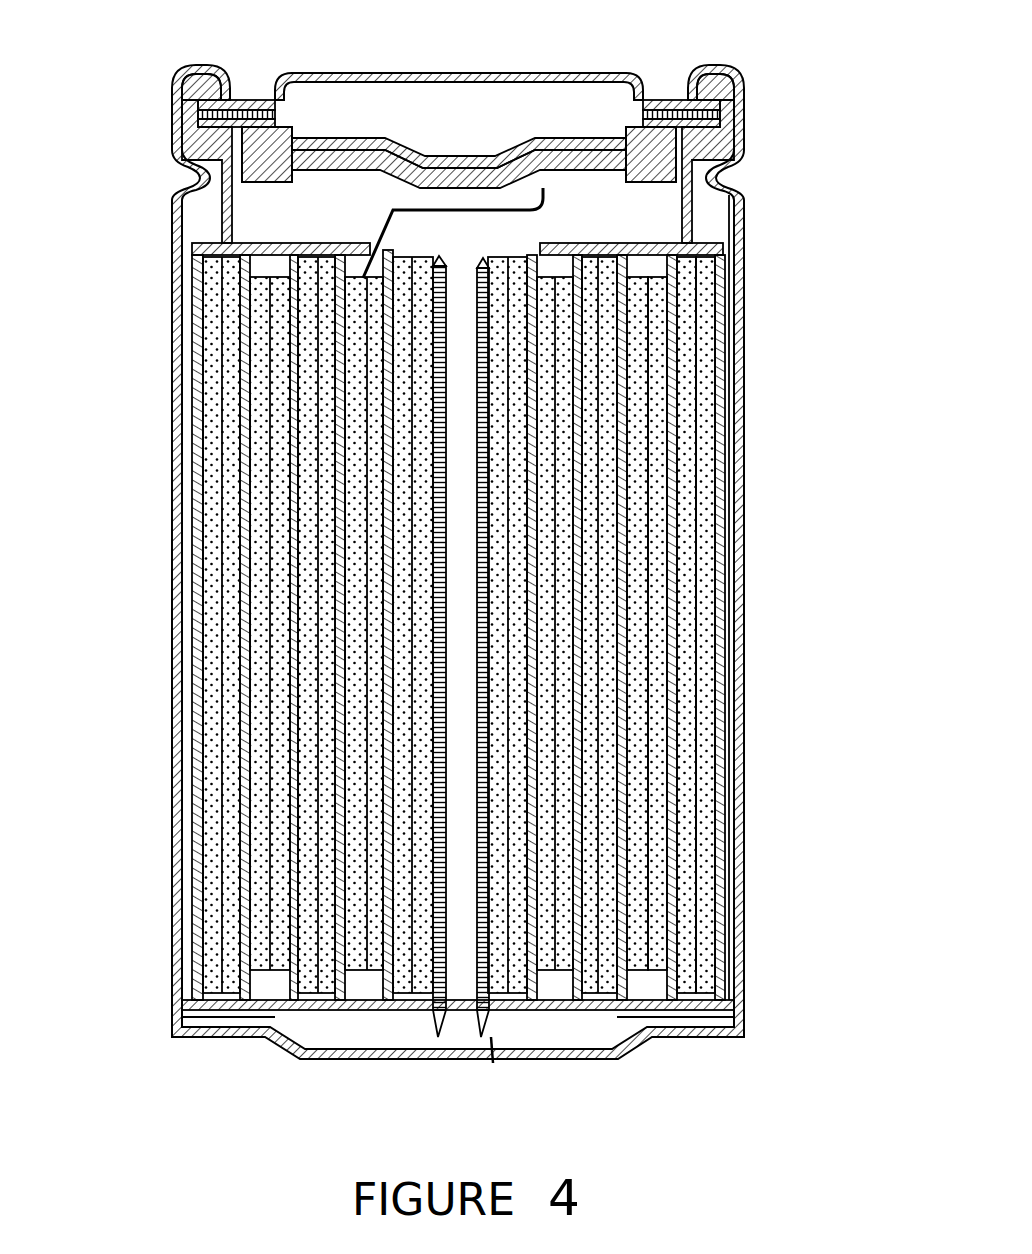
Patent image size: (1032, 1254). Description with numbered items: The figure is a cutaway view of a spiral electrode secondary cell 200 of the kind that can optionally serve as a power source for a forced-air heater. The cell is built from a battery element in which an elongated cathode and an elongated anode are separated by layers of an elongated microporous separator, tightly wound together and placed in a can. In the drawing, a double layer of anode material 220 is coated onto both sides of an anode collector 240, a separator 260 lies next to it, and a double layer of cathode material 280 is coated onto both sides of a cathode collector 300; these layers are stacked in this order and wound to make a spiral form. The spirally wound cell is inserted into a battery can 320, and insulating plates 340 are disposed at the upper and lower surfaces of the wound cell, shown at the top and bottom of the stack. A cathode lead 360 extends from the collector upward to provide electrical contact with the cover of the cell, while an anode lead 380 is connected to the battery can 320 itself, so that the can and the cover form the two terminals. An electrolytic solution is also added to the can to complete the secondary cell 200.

The secondary cell 200 is at (147, 130).
The battery can 320 is at (747, 202).
The cathode lead 360 is at (503, 213).
The anode material 220 is at (697, 350).
The anode collector 240 is at (690, 435).
The cathode material 280 is at (678, 540).
The separator 260 is at (652, 690).
The cathode collector 300 is at (645, 767).
The insulating plates 340 is at (640, 1033).
The anode lead 380 is at (275, 1043).